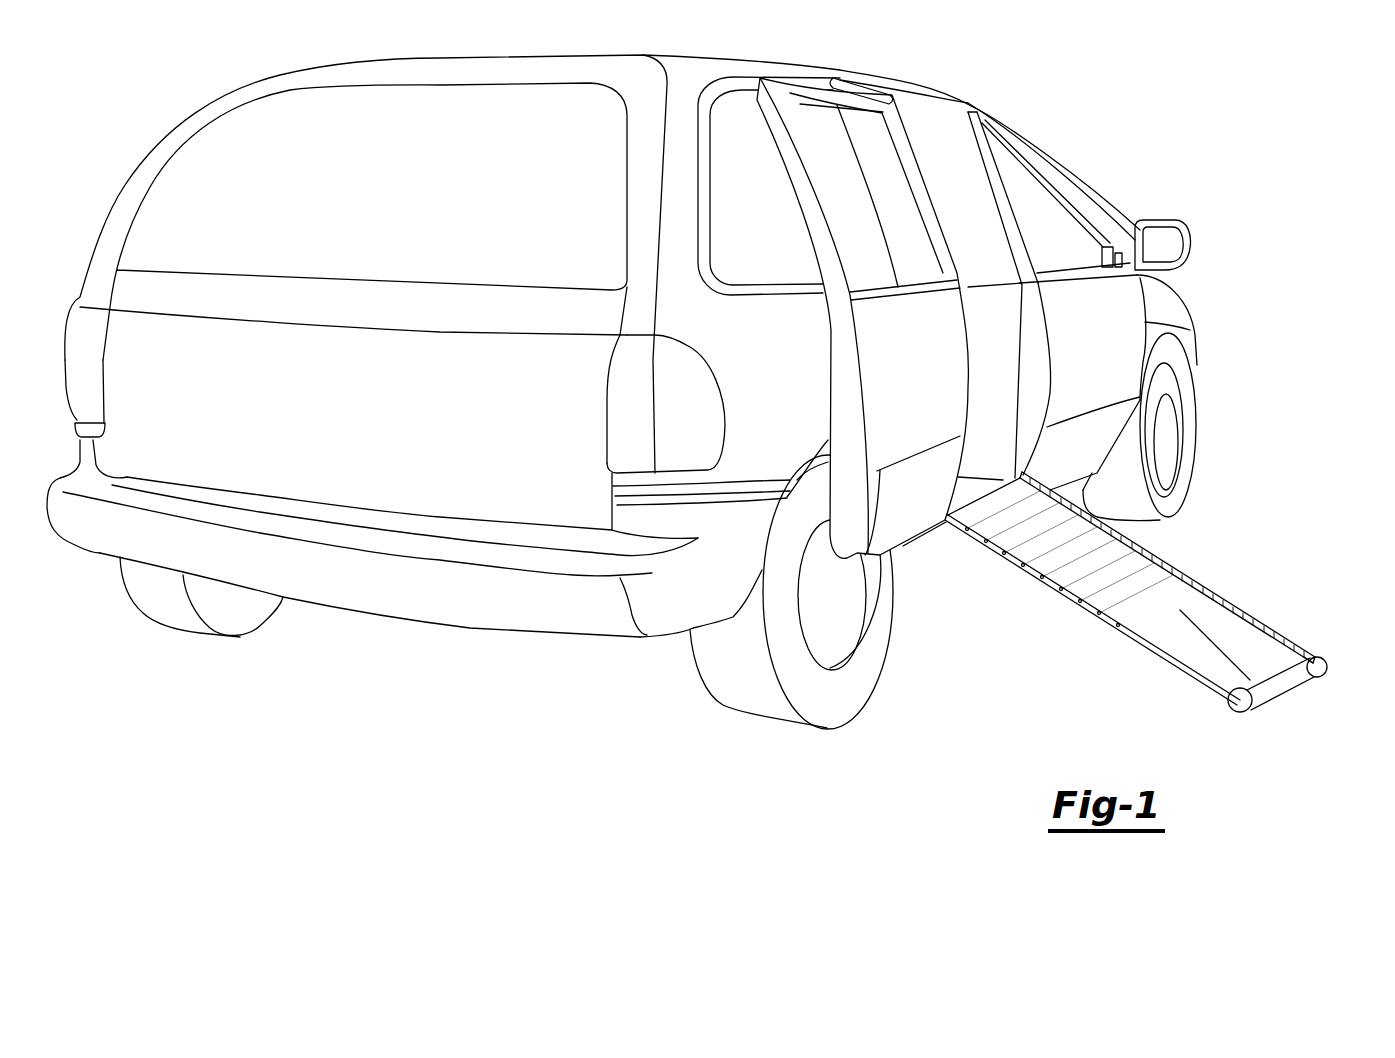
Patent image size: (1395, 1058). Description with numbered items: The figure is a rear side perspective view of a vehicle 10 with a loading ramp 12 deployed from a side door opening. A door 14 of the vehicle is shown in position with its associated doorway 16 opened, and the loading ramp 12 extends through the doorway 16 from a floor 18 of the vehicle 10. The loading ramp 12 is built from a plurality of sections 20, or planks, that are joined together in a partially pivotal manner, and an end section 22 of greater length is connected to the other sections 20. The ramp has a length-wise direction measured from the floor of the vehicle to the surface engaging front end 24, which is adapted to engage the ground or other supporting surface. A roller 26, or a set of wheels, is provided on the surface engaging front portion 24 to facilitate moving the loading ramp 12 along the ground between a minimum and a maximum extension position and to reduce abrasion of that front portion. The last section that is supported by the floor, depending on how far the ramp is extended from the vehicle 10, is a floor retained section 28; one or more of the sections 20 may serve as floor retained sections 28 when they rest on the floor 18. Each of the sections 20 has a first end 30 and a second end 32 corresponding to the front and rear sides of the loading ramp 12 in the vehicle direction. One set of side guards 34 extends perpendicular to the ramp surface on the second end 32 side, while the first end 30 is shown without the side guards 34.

The vehicle 10 is at (1177, 113).
The loading ramp 12 is at (1162, 600).
The door 14 is at (953, 337).
The doorway 16 is at (993, 352).
The floor 18 is at (965, 475).
The sections 20 is at (1030, 552).
The end section 22 is at (1248, 637).
The surface engaging front end 24 is at (1280, 685).
The roller 26 is at (1330, 667).
The floor retained section 28 is at (988, 486).
The first end 30 is at (1063, 568).
The second end 32 is at (1175, 592).
The side guards 34 is at (1288, 647).